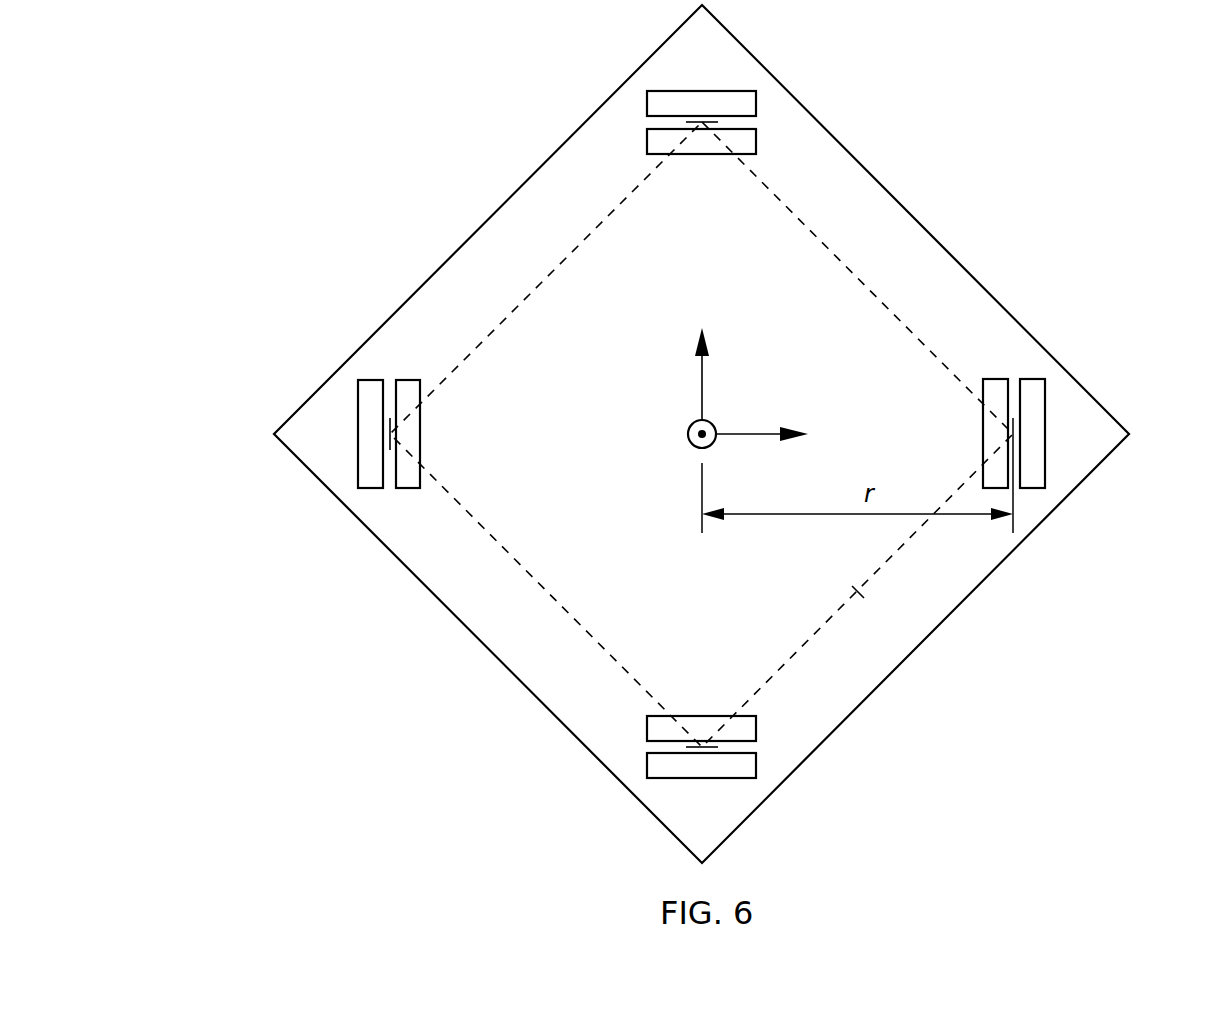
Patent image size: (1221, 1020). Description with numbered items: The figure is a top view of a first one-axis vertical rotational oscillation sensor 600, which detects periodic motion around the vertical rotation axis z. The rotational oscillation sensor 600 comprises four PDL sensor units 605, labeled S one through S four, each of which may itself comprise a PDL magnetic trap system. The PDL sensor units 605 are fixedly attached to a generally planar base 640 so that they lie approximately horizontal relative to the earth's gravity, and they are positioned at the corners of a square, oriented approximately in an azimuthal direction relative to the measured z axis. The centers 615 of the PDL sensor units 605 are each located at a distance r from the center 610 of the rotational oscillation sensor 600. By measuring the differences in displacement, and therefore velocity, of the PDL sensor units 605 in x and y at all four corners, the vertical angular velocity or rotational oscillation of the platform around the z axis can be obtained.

The rotational oscillation sensor 600 is at (349, 152).
The PDL sensor units 605 is at (662, 103).
The center of the rotational oscillation sensor 610 is at (694, 447).
The centers of the PDL sensor units 615 is at (702, 122).
The generally planar base 640 is at (826, 305).